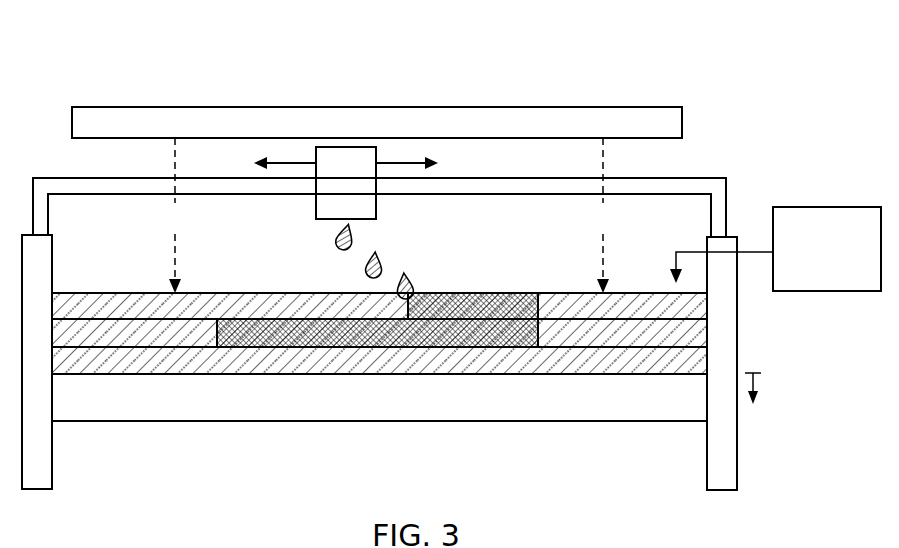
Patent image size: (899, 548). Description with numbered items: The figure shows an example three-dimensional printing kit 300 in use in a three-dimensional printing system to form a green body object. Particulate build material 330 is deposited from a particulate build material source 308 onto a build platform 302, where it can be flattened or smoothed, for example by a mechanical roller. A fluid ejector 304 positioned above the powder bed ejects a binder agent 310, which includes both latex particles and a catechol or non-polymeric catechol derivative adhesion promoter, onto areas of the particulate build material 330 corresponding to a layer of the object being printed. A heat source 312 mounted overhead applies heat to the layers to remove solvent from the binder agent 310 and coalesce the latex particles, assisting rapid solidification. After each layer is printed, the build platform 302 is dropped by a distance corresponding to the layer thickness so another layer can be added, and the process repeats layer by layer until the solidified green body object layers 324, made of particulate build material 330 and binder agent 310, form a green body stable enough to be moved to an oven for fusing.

The three-dimensional printing kit 300 is at (100, 50).
The build platform 302 is at (545, 385).
The fluid ejector 304 is at (346, 183).
The particulate build material source 308 is at (775, 249).
The binder agent 310 is at (337, 240).
The heat source 312 is at (377, 122).
The solidified green body object layers 324 is at (343, 335).
The particulate build material 330 is at (120, 330).